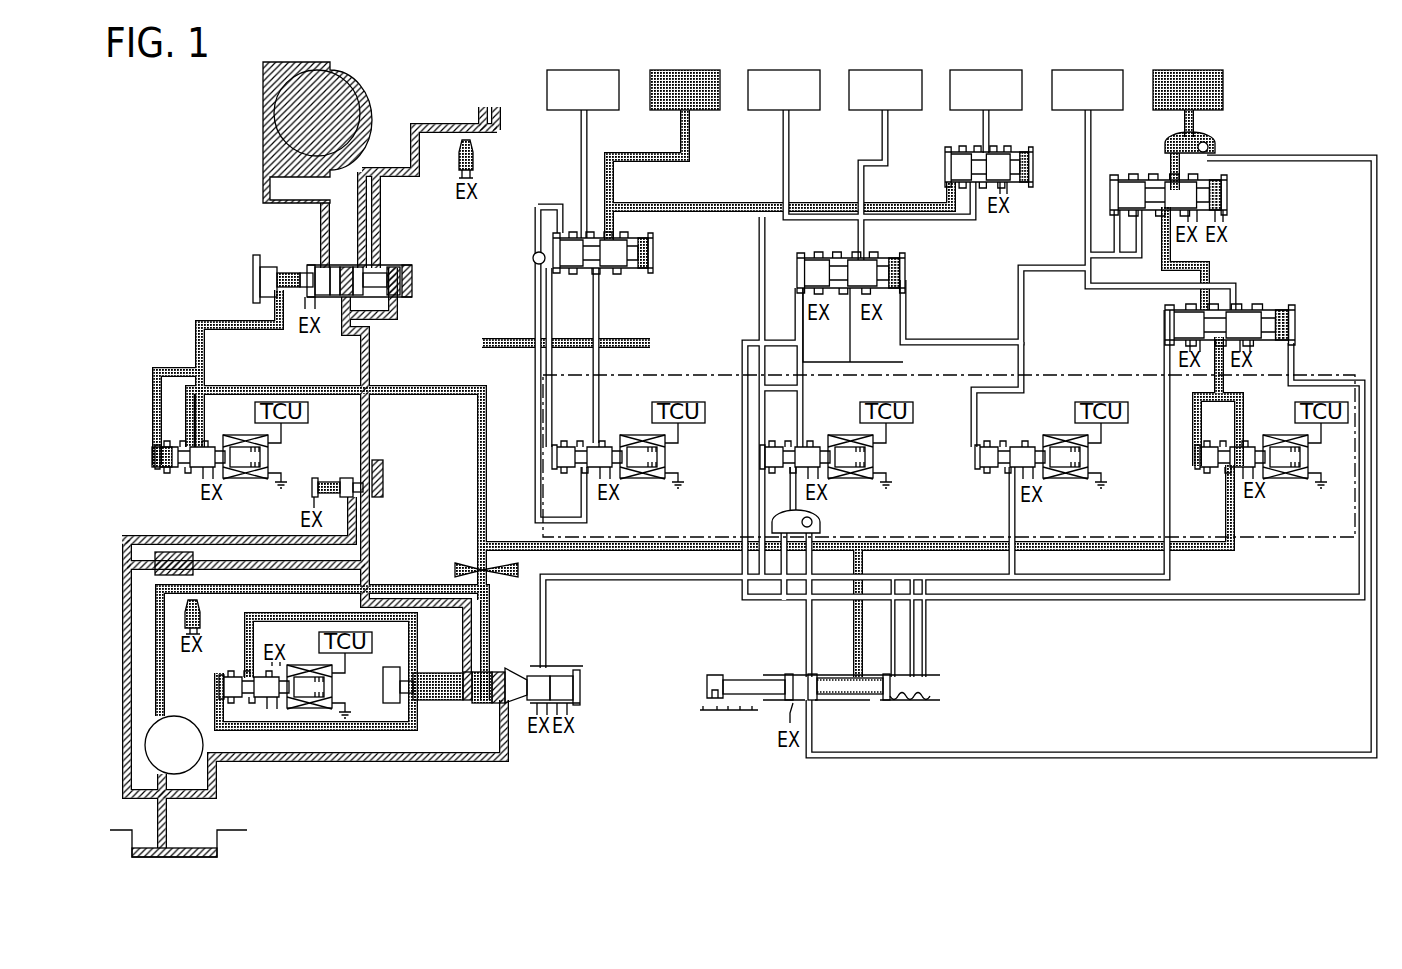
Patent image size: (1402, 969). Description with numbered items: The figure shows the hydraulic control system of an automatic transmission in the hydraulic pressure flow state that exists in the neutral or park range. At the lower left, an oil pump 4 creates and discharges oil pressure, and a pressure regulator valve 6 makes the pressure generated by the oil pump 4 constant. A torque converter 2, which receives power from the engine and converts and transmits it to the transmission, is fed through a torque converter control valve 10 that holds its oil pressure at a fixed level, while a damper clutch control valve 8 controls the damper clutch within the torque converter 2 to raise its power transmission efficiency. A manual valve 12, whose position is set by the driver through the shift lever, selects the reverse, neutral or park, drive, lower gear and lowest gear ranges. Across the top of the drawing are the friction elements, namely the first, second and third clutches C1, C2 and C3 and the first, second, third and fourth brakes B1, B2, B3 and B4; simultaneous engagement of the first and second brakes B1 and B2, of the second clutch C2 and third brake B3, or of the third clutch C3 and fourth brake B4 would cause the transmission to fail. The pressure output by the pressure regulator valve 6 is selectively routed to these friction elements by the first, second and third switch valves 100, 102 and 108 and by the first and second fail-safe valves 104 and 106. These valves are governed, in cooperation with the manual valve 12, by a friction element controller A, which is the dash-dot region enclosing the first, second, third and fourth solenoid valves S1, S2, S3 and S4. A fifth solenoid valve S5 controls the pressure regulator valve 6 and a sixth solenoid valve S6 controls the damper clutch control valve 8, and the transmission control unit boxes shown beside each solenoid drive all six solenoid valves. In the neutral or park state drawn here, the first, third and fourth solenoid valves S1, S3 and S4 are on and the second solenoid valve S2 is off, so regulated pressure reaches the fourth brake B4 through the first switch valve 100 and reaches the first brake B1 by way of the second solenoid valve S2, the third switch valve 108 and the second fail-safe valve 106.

The torque converter 2 is at (373, 82).
The oil pump 4 is at (182, 717).
The pressure regulator valve 6 is at (593, 677).
The damper clutch control valve 8 is at (246, 280).
The torque converter control valve 10 is at (337, 467).
The manual valve 12 is at (788, 668).
The first switch valve 100 is at (658, 250).
The second switch valve 102 is at (912, 273).
The first fail-safe valve 104 is at (1018, 190).
The second fail-safe valve 106 is at (1235, 197).
The third switch valve 108 is at (1267, 303).
The first solenoid valve S1 is at (673, 457).
The second solenoid valve S2 is at (1257, 430).
The third solenoid valve S3 is at (880, 457).
The fourth solenoid valve S4 is at (1095, 457).
The fifth solenoid valve S5 is at (235, 665).
The sixth solenoid valve S6 is at (183, 480).
The friction element controller A is at (1335, 372).
The first clutch C1 is at (587, 70).
The second clutch C2 is at (788, 70).
The third clutch C3 is at (990, 70).
The first brake B1 is at (1193, 70).
The second brake B2 is at (1092, 70).
The third brake B3 is at (889, 70).
The fourth brake B4 is at (689, 70).